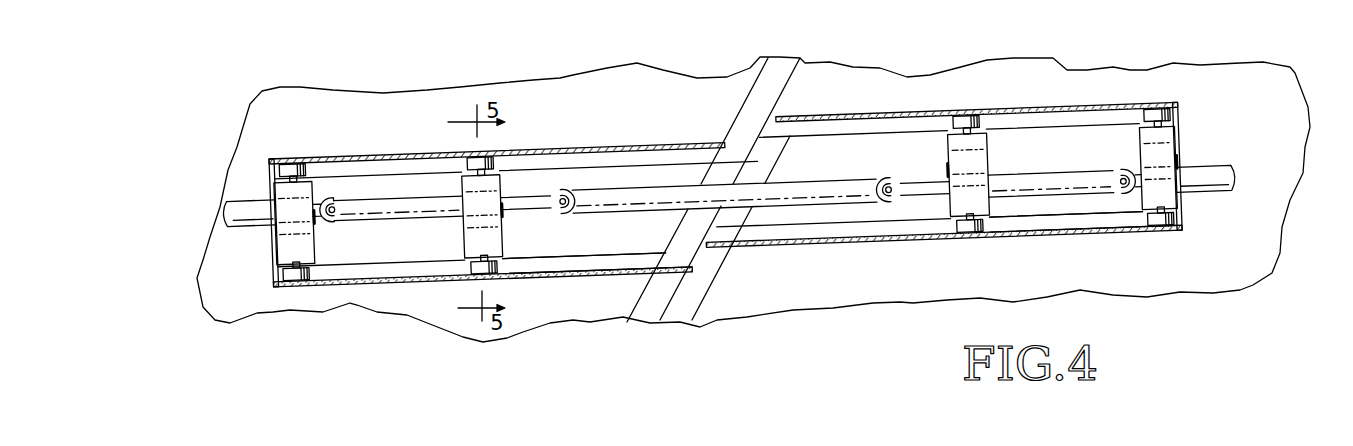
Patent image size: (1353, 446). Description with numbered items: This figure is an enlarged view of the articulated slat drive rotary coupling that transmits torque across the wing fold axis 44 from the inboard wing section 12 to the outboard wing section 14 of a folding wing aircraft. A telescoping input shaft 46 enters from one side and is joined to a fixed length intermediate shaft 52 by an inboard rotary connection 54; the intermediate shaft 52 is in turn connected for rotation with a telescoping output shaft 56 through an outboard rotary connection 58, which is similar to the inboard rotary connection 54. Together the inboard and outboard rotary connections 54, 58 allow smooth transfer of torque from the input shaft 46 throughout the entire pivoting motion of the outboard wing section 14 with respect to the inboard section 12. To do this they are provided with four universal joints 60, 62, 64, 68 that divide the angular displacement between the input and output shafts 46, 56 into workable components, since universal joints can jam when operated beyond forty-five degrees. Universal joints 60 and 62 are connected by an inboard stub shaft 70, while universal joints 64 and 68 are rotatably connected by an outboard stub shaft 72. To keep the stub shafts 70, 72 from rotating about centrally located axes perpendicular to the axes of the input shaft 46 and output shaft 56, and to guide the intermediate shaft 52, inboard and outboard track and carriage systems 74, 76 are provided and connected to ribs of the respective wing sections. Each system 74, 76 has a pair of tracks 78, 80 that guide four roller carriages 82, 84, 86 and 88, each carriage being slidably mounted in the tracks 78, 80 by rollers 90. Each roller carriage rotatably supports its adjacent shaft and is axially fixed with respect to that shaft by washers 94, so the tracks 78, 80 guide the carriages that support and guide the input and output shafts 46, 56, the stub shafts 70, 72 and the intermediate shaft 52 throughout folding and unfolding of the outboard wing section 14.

The inboard wing section 12 is at (1285, 141).
The outboard wing section 14 is at (375, 134).
The wing fold axis 44 is at (808, 116).
The telescoping input shaft 46 is at (1228, 190).
The intermediate shaft 52 is at (803, 208).
The inboard rotary connection 54 is at (1028, 210).
The telescoping output shaft 56 is at (243, 228).
The outboard rotary connection 58 is at (414, 250).
The universal joint 60 is at (1110, 168).
The universal joint 62 is at (888, 212).
The universal joint 64 is at (561, 214).
The universal joint 68 is at (334, 224).
The inboard stub shaft 70 is at (1022, 174).
The outboard stub shaft 72 is at (392, 196).
The inboard track and carriage system 74 is at (991, 104).
The outboard track and carriage system 76 is at (611, 142).
The track 78 is at (1107, 231).
The track 80 is at (607, 264).
The roller carriage 82 is at (1182, 132).
The roller carriage 84 is at (951, 152).
The roller carriage 86 is at (463, 241).
The roller carriage 88 is at (310, 192).
The rollers 90 is at (1173, 224).
The washers 94 is at (1182, 161).